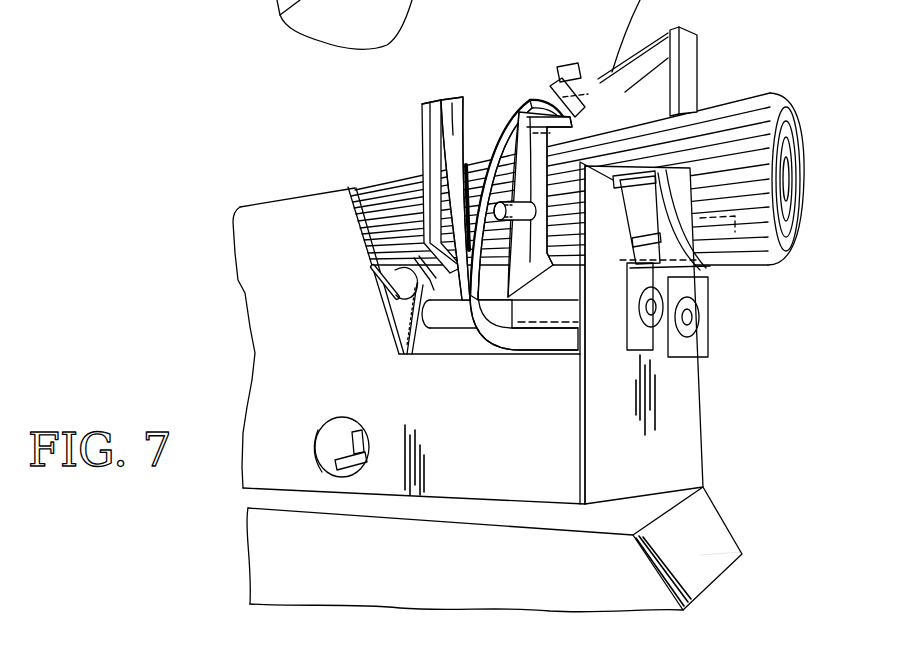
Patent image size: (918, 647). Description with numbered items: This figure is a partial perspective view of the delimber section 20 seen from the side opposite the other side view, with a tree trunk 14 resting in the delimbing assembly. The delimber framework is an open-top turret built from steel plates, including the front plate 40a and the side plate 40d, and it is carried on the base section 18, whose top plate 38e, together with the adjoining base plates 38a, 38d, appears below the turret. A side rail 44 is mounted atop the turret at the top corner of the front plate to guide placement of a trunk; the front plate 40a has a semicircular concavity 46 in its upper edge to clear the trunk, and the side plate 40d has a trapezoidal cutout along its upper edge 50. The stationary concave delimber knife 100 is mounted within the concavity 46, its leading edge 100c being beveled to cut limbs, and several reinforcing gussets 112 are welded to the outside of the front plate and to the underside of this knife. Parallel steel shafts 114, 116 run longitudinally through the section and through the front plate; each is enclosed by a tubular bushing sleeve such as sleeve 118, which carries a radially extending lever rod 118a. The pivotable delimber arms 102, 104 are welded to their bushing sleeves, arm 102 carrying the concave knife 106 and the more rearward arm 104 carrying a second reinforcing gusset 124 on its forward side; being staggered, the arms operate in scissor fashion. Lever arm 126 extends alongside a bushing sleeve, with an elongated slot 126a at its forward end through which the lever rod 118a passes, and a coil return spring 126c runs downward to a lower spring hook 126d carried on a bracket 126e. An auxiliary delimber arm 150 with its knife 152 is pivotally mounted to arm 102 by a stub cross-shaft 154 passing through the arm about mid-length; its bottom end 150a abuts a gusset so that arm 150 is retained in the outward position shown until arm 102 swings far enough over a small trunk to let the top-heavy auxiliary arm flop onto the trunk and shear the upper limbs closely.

The tree trunk 14 is at (767, 92).
The corner block 18 is at (727, 507).
The delimber section 20 is at (183, 277).
The base end face 38a is at (725, 550).
The base front face 38d is at (556, 579).
The base section top plate 38e is at (460, 513).
The front plate 40a is at (665, 470).
The side plate 40d is at (560, 447).
The side rail 44 is at (692, 52).
The semicircular concavity 46 is at (627, 227).
The trapezoidal cutout upper edge 50 is at (453, 345).
The concave delimber knife 100 is at (712, 265).
The leading edge of delimber knife 100c is at (707, 270).
The delimber arm 102 is at (522, 110).
The delimber arm 104 is at (582, 77).
The delimber knife 106 is at (540, 108).
The reinforcing gusset 112 is at (643, 190).
The steel shaft 114 is at (660, 372).
The steel shaft 116 is at (698, 323).
The bushing sleeve 118 is at (555, 318).
The lever rod 118a is at (373, 273).
The second reinforcing gusset 124 is at (580, 293).
The lever arm 126 is at (390, 313).
The elongated slot 126a is at (385, 295).
The coil return spring 126c is at (405, 354).
The lower spring hook 126d is at (365, 448).
The hole bolt 126e is at (348, 477).
The auxiliary delimber arm 150 is at (423, 155).
The bottom end of auxiliary delimber arm 150a is at (428, 103).
The auxiliary delimber knife 152 is at (452, 103).
The stub cross-shaft 154 is at (508, 110).